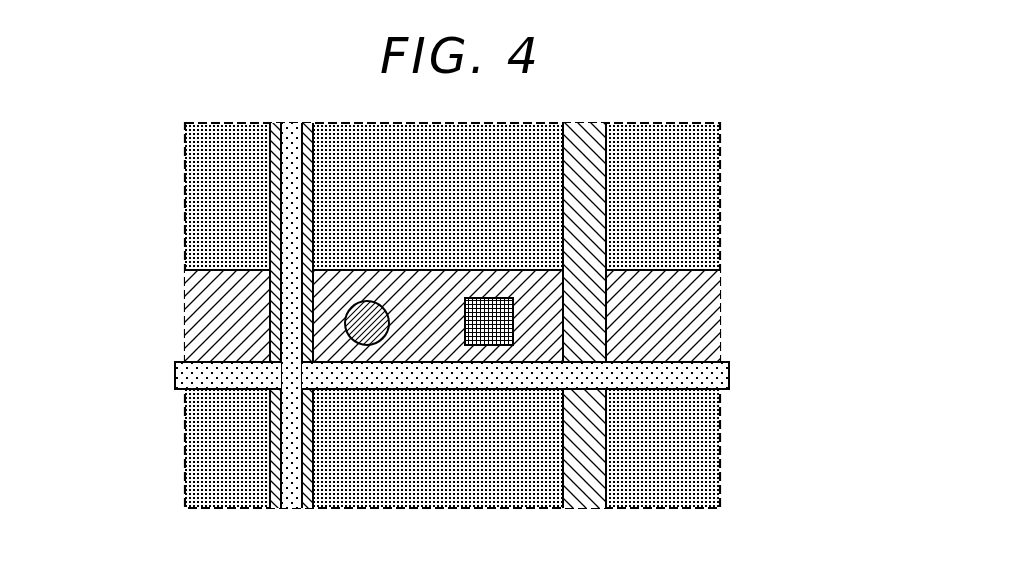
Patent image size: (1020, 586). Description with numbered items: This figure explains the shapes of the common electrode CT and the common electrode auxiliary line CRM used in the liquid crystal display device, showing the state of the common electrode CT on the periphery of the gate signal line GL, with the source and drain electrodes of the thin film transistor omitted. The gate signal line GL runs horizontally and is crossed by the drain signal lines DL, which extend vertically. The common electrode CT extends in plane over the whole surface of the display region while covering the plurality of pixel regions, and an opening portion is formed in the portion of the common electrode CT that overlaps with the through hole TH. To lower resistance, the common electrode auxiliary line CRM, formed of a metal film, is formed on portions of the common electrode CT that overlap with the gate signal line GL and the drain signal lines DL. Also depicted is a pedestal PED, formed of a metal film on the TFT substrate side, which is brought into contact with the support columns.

The drain signal line DL is at (272, 180).
The gate signal line GL is at (707, 293).
The common electrode CT is at (687, 155).
The common electrode auxiliary line CRM is at (730, 377).
The through hole TH is at (370, 337).
The pedestal PED is at (487, 330).